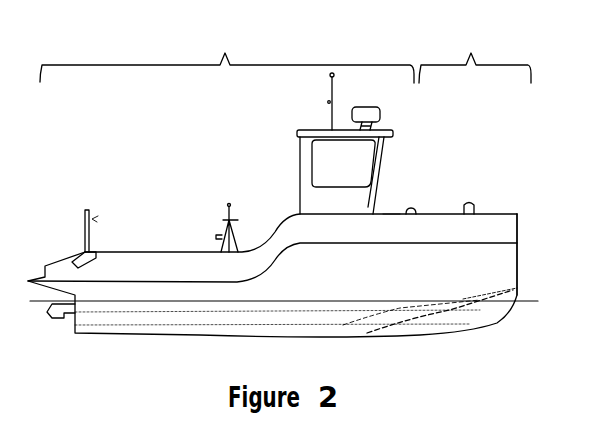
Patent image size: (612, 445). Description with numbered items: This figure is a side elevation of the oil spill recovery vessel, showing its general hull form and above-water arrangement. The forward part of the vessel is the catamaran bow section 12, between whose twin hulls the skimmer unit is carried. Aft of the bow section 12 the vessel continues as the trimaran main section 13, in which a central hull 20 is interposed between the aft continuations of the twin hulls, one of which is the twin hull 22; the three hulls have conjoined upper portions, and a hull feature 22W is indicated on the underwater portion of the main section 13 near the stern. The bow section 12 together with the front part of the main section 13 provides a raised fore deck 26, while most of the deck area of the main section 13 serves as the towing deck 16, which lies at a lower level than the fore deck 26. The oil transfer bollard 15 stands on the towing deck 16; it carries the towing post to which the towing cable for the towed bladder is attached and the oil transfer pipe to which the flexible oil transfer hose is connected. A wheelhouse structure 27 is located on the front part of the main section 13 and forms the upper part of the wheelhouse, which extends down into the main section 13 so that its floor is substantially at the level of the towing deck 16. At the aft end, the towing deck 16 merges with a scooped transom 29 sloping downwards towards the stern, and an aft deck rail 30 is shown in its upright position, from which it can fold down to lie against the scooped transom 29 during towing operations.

The catamaran bow section 12 is at (475, 58).
The trimaran main section 13 is at (227, 58).
The oil transfer bollard 15 is at (229, 216).
The towing deck 16 is at (157, 249).
The central hull 20 is at (323, 340).
The twin hull 22 is at (492, 297).
The waterjet tunnel 22W is at (425, 313).
The raised fore deck 26 is at (387, 208).
The wheelhouse structure 27 is at (302, 172).
The scooped transom 29 is at (67, 272).
The aft deck rail 30 is at (84, 213).